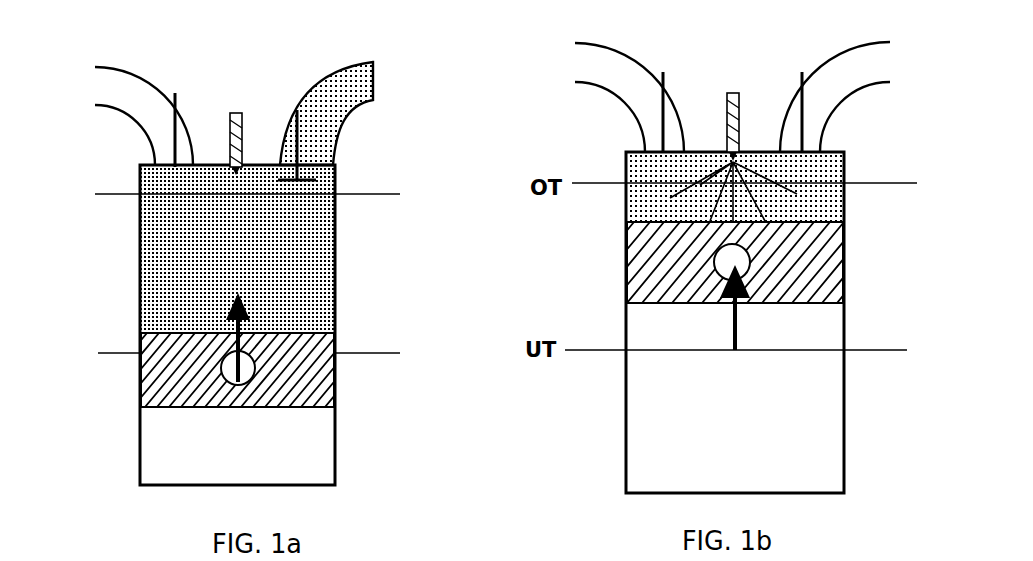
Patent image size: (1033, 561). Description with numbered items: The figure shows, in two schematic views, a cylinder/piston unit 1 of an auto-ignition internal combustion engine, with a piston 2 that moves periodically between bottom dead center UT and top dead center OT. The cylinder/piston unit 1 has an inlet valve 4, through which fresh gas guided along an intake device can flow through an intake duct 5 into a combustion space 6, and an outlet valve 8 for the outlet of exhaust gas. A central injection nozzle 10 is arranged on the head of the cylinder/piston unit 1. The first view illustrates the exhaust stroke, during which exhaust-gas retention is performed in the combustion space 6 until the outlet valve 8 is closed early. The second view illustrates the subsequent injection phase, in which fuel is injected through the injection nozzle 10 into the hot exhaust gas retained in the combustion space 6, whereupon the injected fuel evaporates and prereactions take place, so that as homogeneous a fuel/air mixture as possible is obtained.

In FIG. 1a, the cylinder/piston unit 1 is at (394, 275).
In FIG. 1a, the piston 2 is at (327, 340).
In FIG. 1a, the inlet valve 4 is at (178, 115).
In FIG. 1b, the inlet valve 4 is at (667, 83).
In FIG. 1a, the intake duct 5 is at (132, 82).
In FIG. 1a, the combustion space 6 is at (160, 248).
In FIG. 1a, the outlet valve 8 is at (302, 127).
In FIG. 1b, the outlet valve 8 is at (802, 110).
In FIG. 1a, the injection nozzle 10 is at (240, 112).
In FIG. 1b, the injection nozzle 10 is at (735, 92).